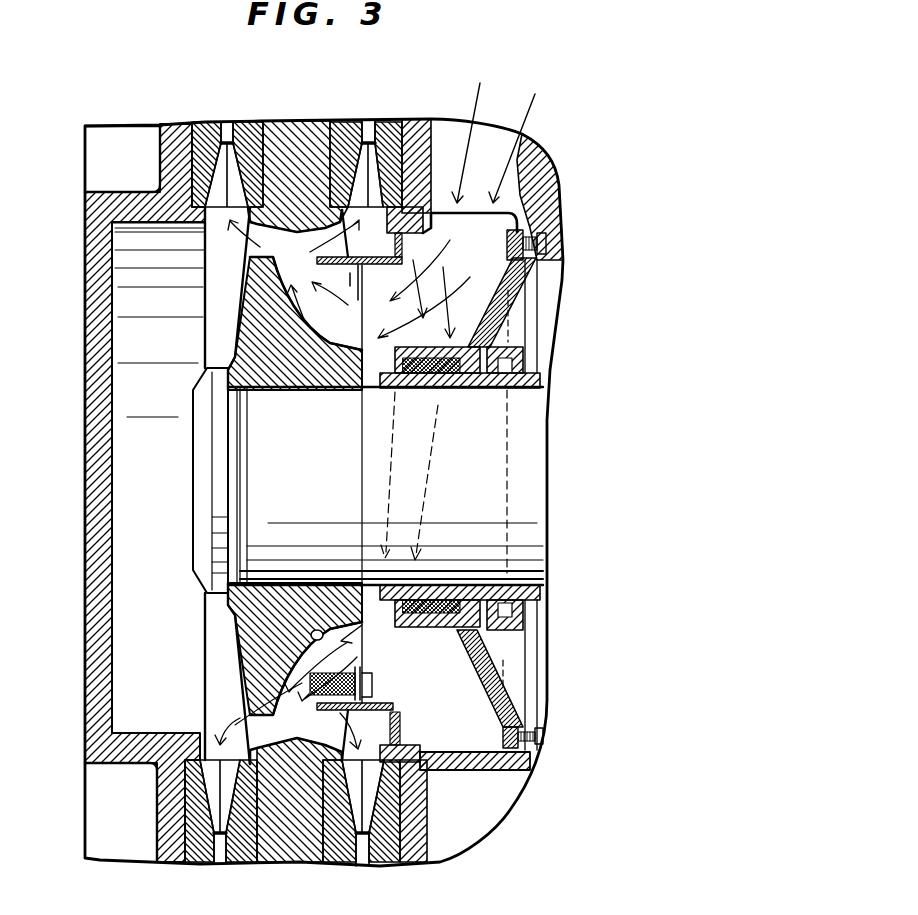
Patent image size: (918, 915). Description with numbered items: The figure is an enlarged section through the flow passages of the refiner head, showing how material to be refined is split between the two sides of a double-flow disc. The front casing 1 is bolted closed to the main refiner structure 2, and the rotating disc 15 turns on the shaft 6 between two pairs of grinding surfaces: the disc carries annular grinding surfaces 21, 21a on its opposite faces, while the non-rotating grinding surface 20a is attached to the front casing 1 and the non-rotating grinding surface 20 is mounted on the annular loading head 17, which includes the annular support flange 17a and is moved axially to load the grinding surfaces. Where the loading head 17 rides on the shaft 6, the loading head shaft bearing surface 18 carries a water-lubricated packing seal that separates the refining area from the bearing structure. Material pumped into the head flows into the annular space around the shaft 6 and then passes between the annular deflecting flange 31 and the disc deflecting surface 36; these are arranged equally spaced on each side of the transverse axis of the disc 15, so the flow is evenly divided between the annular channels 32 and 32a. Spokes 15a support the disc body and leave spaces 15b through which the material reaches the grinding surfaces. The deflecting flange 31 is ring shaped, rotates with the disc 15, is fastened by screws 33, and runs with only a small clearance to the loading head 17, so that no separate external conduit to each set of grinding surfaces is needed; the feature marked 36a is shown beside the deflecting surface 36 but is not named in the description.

The front casing 1 is at (60, 218).
The main refiner structure 2 is at (577, 200).
The shaft 6 is at (525, 443).
The rotating disc 15 is at (293, 130).
The spokes 15a is at (355, 310).
The spaces 15b is at (266, 258).
The loading head 17 is at (418, 801).
The annular support flange 17a is at (532, 766).
The loading head shaft bearing surface 18 is at (528, 663).
The non-rotating grinding surface 20 is at (388, 125).
The non-rotating grinding surface 20a is at (207, 133).
The annular grinding surface 21 is at (347, 125).
The annular grinding surface 21a is at (250, 130).
The annular deflecting flange 31 is at (372, 262).
The annular channel 32 is at (375, 210).
The annular channel 32a is at (218, 188).
The screws 33 is at (386, 670).
The disc deflecting surface 36 is at (316, 337).
The opening 36a is at (308, 633).